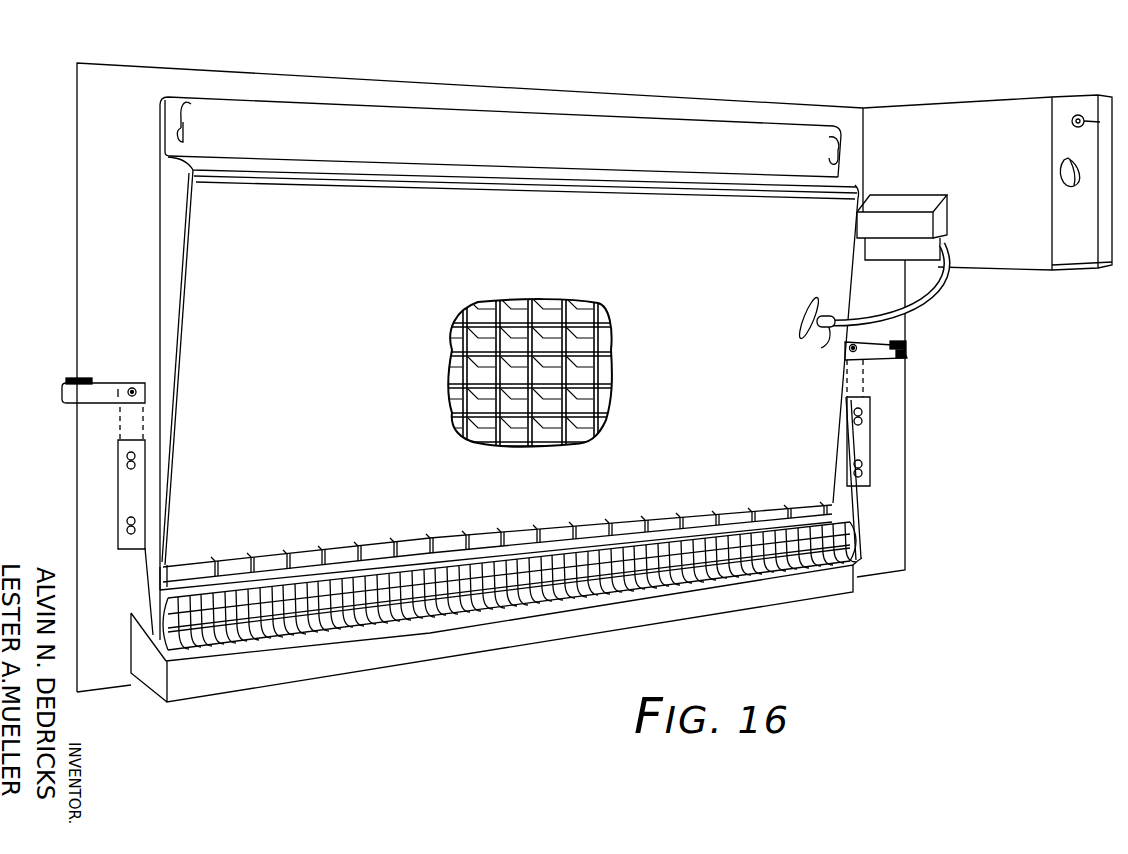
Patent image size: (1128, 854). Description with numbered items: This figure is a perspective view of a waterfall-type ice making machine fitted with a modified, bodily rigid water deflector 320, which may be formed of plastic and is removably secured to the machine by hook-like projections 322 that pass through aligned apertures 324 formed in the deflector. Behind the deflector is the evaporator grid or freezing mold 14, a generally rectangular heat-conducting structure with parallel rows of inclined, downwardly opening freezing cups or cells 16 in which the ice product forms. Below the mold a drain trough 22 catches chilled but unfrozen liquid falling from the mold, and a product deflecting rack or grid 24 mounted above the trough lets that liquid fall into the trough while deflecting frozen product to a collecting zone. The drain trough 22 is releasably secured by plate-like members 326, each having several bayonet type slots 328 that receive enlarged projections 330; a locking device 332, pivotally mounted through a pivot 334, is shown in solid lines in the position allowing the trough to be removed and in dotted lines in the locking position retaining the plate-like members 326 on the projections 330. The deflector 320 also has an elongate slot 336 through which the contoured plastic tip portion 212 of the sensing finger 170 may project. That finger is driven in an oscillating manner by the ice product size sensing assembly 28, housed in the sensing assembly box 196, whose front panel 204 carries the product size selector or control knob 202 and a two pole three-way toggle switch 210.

The evaporator grid or freezing mold 14 is at (618, 325).
The freezing cups or cells 16 is at (303, 555).
The drain trough 22 is at (238, 667).
The product deflecting rack or grid 24 is at (467, 605).
The ice product size sensing assembly 28 is at (977, 120).
The sensing finger 170 is at (938, 284).
The product size sensing assembly box 196 is at (918, 117).
The product size selector or control knob 202 is at (1062, 160).
The front panel 204 is at (1070, 250).
The two pole three-way toggle switch 210 is at (1093, 114).
The contoured tip portion 212 is at (809, 350).
The bodily rigid water deflector 320 is at (345, 251).
The hook-like projections 322 is at (190, 104).
The aligned apertures 324 is at (185, 138).
The plate-like members 326 is at (127, 492).
The bayonet type slots 328 is at (127, 464).
The enlarged projections 330 is at (125, 521).
The locking device 332 is at (64, 384).
The pivot 334 is at (132, 388).
The elongate slot 336 is at (815, 299).